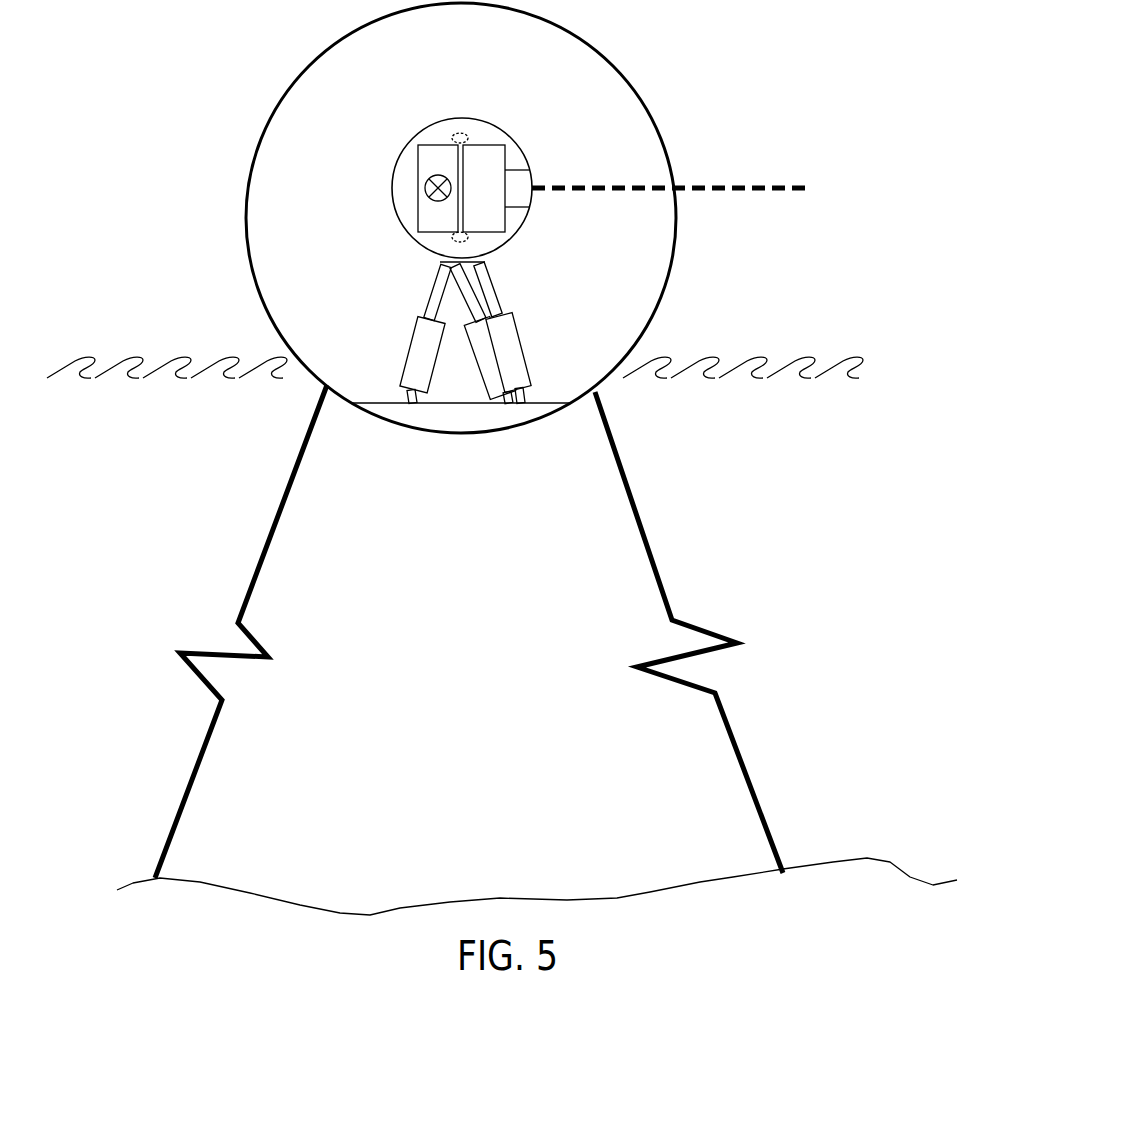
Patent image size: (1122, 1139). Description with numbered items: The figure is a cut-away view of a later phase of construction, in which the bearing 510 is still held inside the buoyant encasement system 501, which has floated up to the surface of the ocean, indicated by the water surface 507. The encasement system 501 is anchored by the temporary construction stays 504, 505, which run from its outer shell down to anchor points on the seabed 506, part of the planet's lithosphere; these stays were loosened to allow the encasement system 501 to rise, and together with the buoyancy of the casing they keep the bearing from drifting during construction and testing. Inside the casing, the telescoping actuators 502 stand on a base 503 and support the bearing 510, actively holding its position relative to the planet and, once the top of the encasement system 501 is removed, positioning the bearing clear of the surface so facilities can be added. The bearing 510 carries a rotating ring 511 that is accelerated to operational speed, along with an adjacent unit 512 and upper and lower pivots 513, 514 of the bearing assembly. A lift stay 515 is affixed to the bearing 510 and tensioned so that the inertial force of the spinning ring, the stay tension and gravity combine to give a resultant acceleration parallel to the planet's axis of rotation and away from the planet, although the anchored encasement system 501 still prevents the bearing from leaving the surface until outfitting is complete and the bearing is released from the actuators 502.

The encasement system 501 is at (248, 273).
The telescoping actuators 502 is at (417, 322).
The base plate 503 is at (397, 400).
The temporary construction stay 504 is at (275, 512).
The temporary construction stay 505 is at (628, 510).
The seabed 506 is at (503, 897).
The water surface 507 is at (130, 350).
The bearing 510 is at (402, 233).
The rotating ring 511 is at (417, 205).
The camera unit 512 is at (457, 167).
The upper pivot 513 is at (452, 137).
The lower pivot 514 is at (452, 240).
The lift stay 515 is at (577, 182).